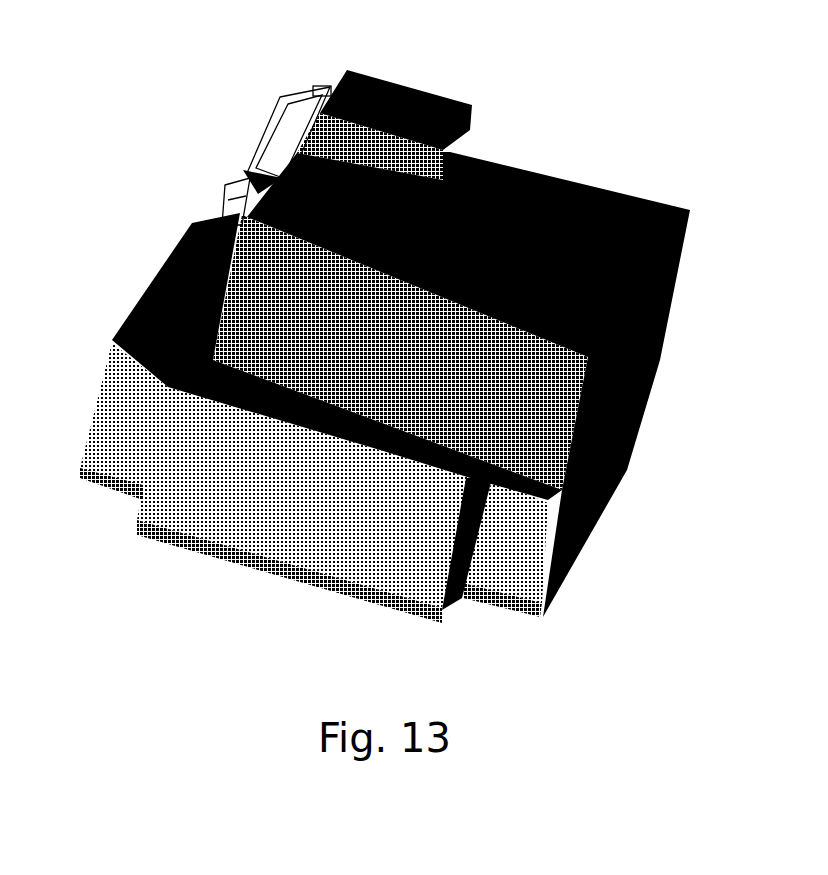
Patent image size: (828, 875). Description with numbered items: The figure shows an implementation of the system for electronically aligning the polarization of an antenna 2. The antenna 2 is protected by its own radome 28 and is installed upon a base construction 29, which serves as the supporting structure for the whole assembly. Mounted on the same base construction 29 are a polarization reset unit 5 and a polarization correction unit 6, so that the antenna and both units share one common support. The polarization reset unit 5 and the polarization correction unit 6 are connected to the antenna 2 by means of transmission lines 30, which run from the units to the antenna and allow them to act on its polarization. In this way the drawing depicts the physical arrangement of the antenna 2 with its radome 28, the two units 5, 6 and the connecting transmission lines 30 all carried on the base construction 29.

The antenna 2 is at (413, 570).
The polarization reset unit 5 is at (398, 115).
The polarization correction unit 6 is at (252, 233).
The radome 28 is at (523, 608).
The base construction 29 is at (653, 227).
The transmission lines 30 is at (308, 92).